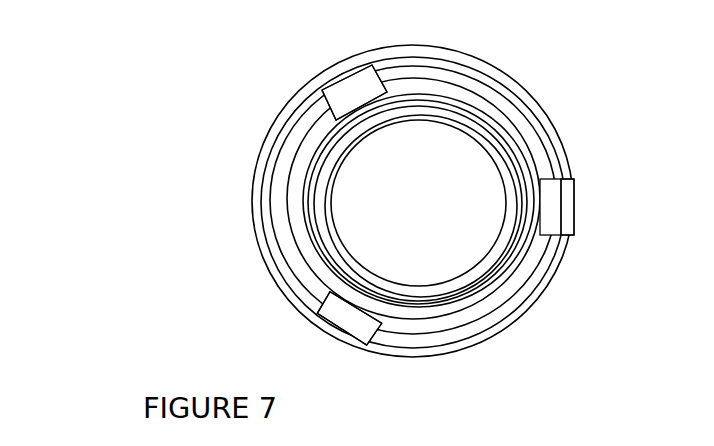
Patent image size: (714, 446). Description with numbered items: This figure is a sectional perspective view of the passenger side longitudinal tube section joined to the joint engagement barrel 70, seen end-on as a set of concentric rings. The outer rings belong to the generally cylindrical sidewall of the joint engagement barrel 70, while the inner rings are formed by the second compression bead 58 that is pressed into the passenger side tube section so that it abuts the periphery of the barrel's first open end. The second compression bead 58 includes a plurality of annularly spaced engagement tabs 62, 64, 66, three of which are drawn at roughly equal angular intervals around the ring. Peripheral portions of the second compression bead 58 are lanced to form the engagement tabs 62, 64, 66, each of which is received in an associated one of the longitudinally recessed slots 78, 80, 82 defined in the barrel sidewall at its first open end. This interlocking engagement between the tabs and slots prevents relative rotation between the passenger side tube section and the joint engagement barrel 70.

The second compression bead 58 is at (512, 295).
The joint engagement barrel 70 is at (563, 248).
The engagement tab 62 is at (553, 200).
The engagement tab 64 is at (353, 315).
The engagement tab 66 is at (348, 98).
The recessed slot 78 is at (563, 213).
The recessed slot 80 is at (342, 330).
The recessed slot 82 is at (333, 87).